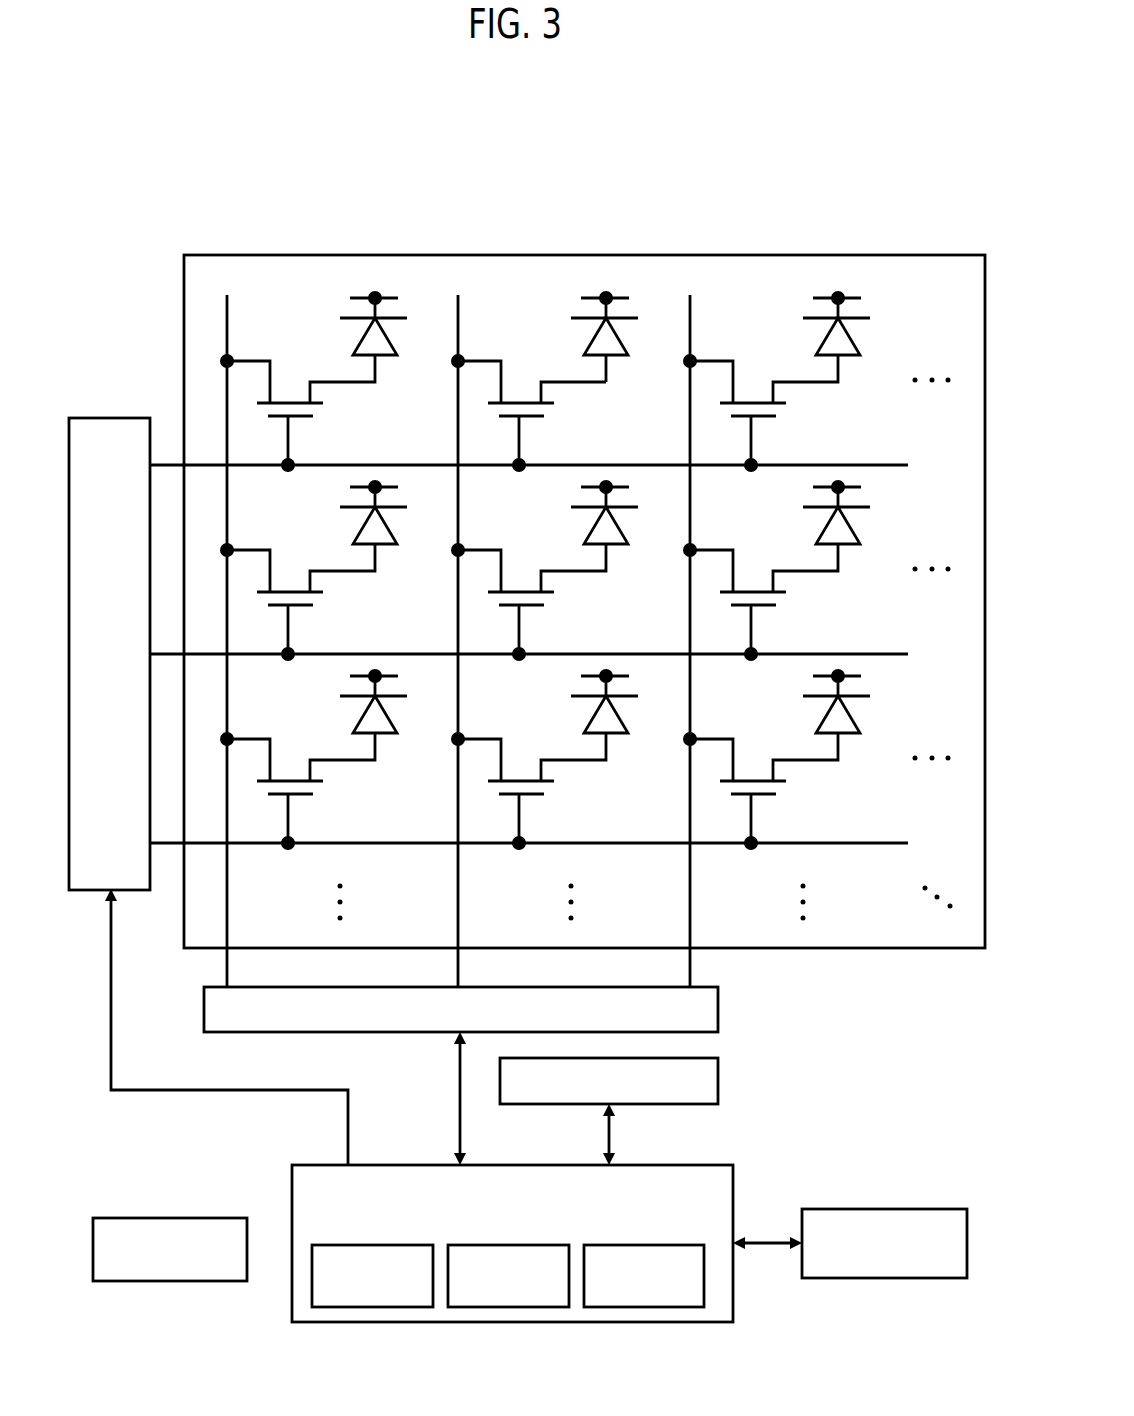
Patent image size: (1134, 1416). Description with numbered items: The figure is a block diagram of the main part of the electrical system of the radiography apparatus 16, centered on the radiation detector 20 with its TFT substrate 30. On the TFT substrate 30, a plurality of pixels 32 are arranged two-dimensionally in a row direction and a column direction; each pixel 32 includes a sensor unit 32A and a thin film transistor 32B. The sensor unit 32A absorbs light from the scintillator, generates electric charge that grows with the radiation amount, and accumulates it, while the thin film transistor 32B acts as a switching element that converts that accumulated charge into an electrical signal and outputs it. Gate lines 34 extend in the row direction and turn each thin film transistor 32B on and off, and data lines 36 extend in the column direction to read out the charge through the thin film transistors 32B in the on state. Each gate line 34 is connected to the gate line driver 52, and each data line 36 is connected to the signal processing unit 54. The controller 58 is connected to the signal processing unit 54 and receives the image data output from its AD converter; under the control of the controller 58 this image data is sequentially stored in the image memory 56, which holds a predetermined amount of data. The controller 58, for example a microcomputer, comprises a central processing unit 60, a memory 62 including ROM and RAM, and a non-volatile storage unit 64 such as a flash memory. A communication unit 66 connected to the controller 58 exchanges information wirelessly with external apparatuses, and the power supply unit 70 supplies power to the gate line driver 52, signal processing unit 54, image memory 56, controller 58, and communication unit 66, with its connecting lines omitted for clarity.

The radiography apparatus 16 is at (895, 191).
The radiation detector 20 is at (680, 236).
The TFT substrate 30 is at (887, 255).
The pixel 32 is at (561, 290).
The sensor unit 32A is at (613, 358).
The thin film transistor 32B is at (520, 402).
The gate line 34 is at (888, 463).
The data line 36 is at (228, 897).
The gate line driver 52 is at (108, 418).
The signal processing unit 54 is at (718, 1008).
The image memory 56 is at (718, 1078).
The controller 58 is at (665, 1163).
The central processing unit 60 is at (375, 1243).
The memory 62 is at (512, 1243).
The storage unit 64 is at (649, 1243).
The communication unit 66 is at (898, 1208).
The power supply unit 70 is at (165, 1217).